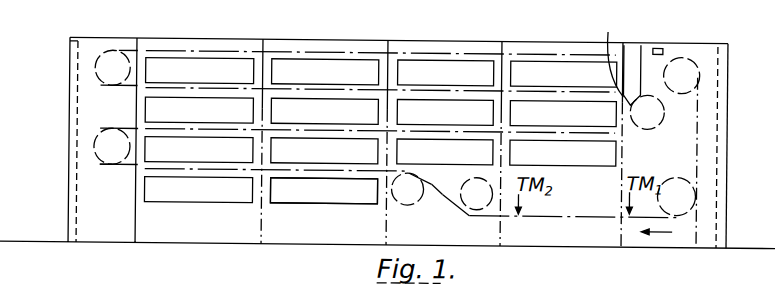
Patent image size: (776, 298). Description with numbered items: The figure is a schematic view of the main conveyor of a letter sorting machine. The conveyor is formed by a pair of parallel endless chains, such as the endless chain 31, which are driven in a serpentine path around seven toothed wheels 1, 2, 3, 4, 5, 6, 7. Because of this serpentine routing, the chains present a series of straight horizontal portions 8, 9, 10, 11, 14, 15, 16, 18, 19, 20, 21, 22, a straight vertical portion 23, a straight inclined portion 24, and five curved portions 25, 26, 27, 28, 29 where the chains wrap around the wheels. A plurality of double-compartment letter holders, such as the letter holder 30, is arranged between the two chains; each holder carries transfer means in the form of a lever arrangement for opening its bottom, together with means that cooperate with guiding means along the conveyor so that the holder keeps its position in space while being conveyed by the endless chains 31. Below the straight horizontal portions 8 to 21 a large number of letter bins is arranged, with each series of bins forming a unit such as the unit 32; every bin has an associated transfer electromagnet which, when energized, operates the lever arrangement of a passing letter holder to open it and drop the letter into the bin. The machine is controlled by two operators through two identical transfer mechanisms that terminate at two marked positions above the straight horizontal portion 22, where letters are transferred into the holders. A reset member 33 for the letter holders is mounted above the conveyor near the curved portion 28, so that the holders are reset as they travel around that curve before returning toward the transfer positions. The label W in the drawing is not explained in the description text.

The toothed wheel 1 is at (466, 205).
The toothed wheel 2 is at (412, 194).
The toothed wheel 3 is at (126, 133).
The toothed wheel 4 is at (610, 55).
The toothed wheel 5 is at (121, 53).
The toothed wheel 6 is at (674, 57).
The toothed wheel 7 is at (680, 177).
The straight horizontal portion 8 is at (320, 187).
The straight horizontal portion 9 is at (198, 194).
The straight horizontal portion 10 is at (178, 164).
The straight horizontal portion 11 is at (303, 164).
The straight horizontal portion 14 is at (542, 98).
The straight horizontal portion 15 is at (423, 99).
The straight horizontal portion 16 is at (288, 99).
The straight horizontal portion 18 is at (213, 59).
The straight horizontal portion 19 is at (280, 60).
The straight horizontal portion 20 is at (413, 61).
The straight horizontal portion 21 is at (527, 59).
The straight horizontal portion 22 is at (541, 215).
The straight vertical portion 23 is at (700, 85).
The straight inclined portion 24 is at (443, 194).
The curved portion 25 is at (100, 134).
The curved portion 26 is at (640, 52).
The curved portion 27 is at (106, 54).
The curved portion 28 is at (693, 62).
The curved portion 29 is at (697, 197).
The double-compartment letter holder 30 is at (188, 47).
The endless chain 31 is at (245, 53).
The unit of letter bins 32 is at (352, 196).
The reset member 33 is at (657, 46).
The web W is at (157, 52).